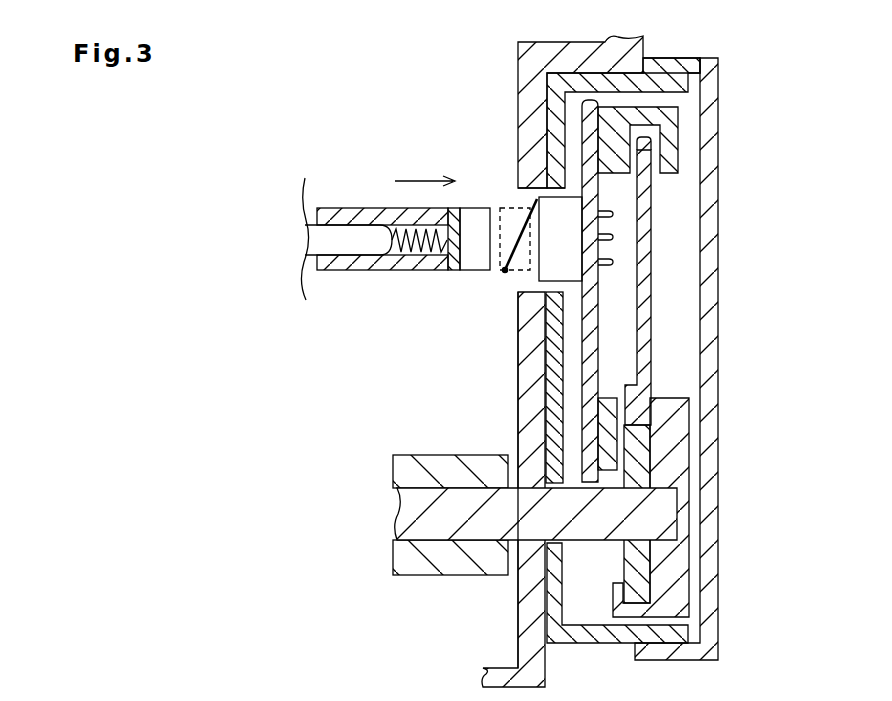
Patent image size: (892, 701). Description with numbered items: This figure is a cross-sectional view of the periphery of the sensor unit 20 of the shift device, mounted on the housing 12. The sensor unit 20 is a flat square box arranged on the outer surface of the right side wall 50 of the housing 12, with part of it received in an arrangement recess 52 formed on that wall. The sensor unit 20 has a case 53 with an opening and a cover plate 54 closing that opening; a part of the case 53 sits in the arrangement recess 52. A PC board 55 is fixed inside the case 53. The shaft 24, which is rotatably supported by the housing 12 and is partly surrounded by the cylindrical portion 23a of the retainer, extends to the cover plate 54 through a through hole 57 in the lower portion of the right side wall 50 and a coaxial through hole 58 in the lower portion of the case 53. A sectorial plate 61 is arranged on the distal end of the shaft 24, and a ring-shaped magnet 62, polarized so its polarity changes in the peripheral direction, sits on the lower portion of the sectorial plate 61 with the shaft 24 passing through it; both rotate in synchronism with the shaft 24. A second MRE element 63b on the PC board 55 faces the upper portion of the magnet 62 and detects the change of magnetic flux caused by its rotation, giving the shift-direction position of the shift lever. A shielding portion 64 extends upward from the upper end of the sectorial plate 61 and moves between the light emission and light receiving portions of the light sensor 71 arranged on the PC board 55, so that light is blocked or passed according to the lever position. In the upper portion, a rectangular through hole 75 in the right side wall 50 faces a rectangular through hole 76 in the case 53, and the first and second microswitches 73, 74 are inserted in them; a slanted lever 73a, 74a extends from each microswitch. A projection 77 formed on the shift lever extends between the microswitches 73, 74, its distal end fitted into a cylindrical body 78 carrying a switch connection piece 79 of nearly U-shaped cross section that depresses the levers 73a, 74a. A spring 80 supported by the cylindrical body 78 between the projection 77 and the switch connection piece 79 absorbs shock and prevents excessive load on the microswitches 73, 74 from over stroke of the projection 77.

The housing 12 is at (507, 47).
The sensor unit 20 is at (577, 351).
The cylindrical portion 23a is at (452, 456).
The shaft 24 is at (402, 511).
The right side wall 50 is at (616, 347).
The arrangement recess 52 is at (548, 82).
The case 53 is at (670, 80).
The cover plate 54 is at (714, 100).
The PC board 55 is at (592, 313).
The through hole 57 is at (520, 540).
The through hole 58 is at (566, 544).
The sectorial plate 61 is at (653, 226).
The magnet 62 is at (622, 562).
The second MRE element 63b is at (610, 398).
The shielding portion 64 is at (645, 152).
The light sensor 71 is at (672, 138).
The first microswitch 73 is at (541, 281).
The lever 73a is at (505, 271).
The second microswitch 74 is at (521, 234).
The lever 74a is at (448, 318).
The rectangular through hole 75 is at (539, 191).
The rectangular through hole 76 is at (522, 189).
The projection 77 is at (322, 240).
The cylindrical body 78 is at (376, 209).
The switch connection piece 79 is at (472, 270).
The spring 80 is at (405, 250).